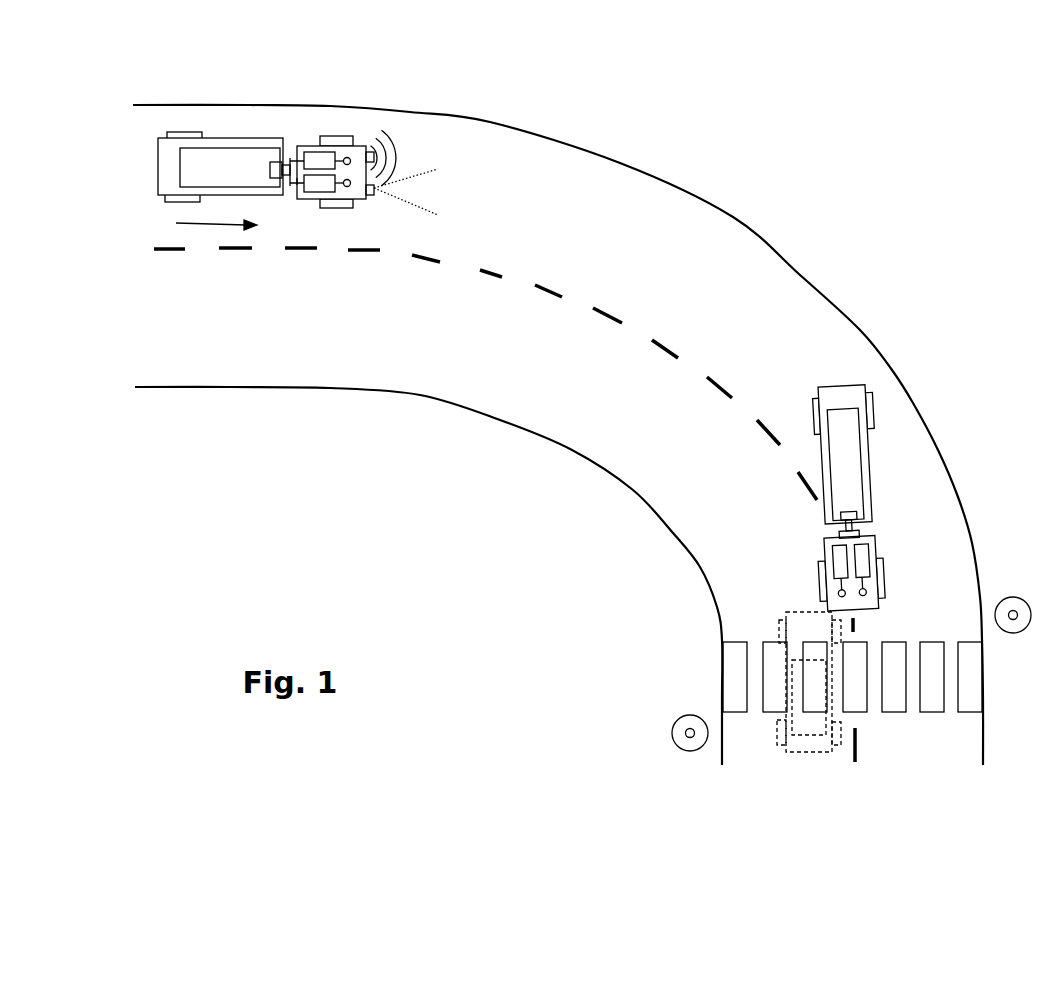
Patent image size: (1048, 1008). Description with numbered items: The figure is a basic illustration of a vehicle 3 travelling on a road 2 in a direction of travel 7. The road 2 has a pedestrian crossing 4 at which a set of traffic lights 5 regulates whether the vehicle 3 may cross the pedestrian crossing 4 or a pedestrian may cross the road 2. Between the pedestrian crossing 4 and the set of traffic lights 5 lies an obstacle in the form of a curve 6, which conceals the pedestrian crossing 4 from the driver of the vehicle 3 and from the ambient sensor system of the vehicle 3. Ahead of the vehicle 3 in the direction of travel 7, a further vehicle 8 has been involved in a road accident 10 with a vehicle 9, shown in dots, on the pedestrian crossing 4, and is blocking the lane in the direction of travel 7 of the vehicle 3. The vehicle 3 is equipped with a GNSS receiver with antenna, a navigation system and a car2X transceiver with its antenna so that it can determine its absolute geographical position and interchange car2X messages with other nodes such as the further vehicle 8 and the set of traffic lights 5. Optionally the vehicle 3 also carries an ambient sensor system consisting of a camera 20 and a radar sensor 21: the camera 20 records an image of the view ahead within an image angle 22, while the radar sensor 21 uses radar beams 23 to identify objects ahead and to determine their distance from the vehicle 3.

The road 2 is at (267, 388).
The vehicle 3 is at (327, 173).
The pedestrian crossing 4 is at (737, 653).
The set of traffic lights 5 is at (828, 637).
The curve 6 is at (779, 204).
The direction of travel 7 is at (205, 229).
The further vehicle 8 is at (858, 502).
The vehicle 9 is at (808, 748).
The road accident 10 is at (740, 538).
The camera 20 is at (372, 199).
The radar sensor 21 is at (378, 140).
The image angle 22 is at (437, 170).
The radar beams 23 is at (406, 147).